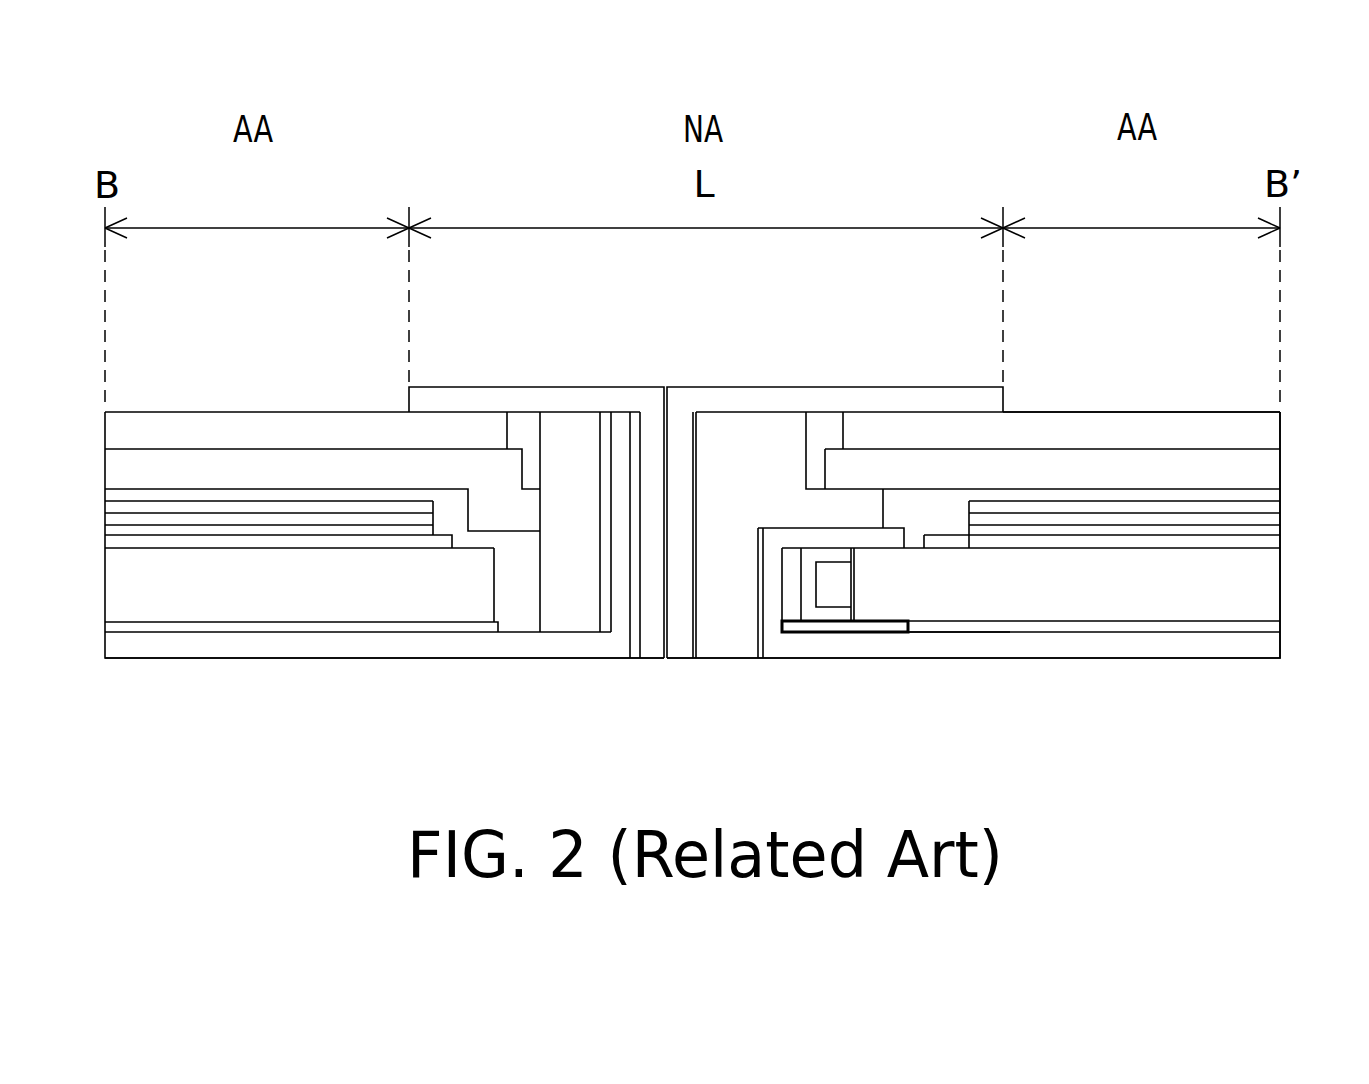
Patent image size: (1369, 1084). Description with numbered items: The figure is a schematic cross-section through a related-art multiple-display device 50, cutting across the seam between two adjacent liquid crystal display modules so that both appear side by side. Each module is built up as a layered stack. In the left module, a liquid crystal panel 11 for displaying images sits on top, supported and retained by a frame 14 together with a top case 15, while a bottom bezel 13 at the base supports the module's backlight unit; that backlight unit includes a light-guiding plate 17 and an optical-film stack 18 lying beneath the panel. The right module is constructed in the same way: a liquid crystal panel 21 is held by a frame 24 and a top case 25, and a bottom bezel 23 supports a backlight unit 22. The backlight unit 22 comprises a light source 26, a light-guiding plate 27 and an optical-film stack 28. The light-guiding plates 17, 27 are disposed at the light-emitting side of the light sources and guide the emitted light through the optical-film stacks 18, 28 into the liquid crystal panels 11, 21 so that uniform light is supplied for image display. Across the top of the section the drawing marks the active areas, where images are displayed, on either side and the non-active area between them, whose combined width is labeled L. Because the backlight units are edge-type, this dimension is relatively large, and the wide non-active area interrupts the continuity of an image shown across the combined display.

The multiple-display device 50 is at (1320, 145).
The liquid crystal panel 11 is at (251, 411).
The bottom bezel 13 is at (393, 643).
The frame 14 is at (573, 443).
The top case 15 is at (470, 403).
The light-guiding plate 17 is at (295, 610).
The optical-film stack 18 is at (102, 500).
The liquid crystal panel 21 is at (1153, 411).
The backlight unit 22 is at (798, 712).
The bottom bezel 23 is at (1158, 643).
The frame 24 is at (755, 443).
The top case 25 is at (860, 403).
The light source 26 is at (827, 613).
The light-guiding plate 27 is at (978, 597).
The optical-film stack 28 is at (1285, 500).